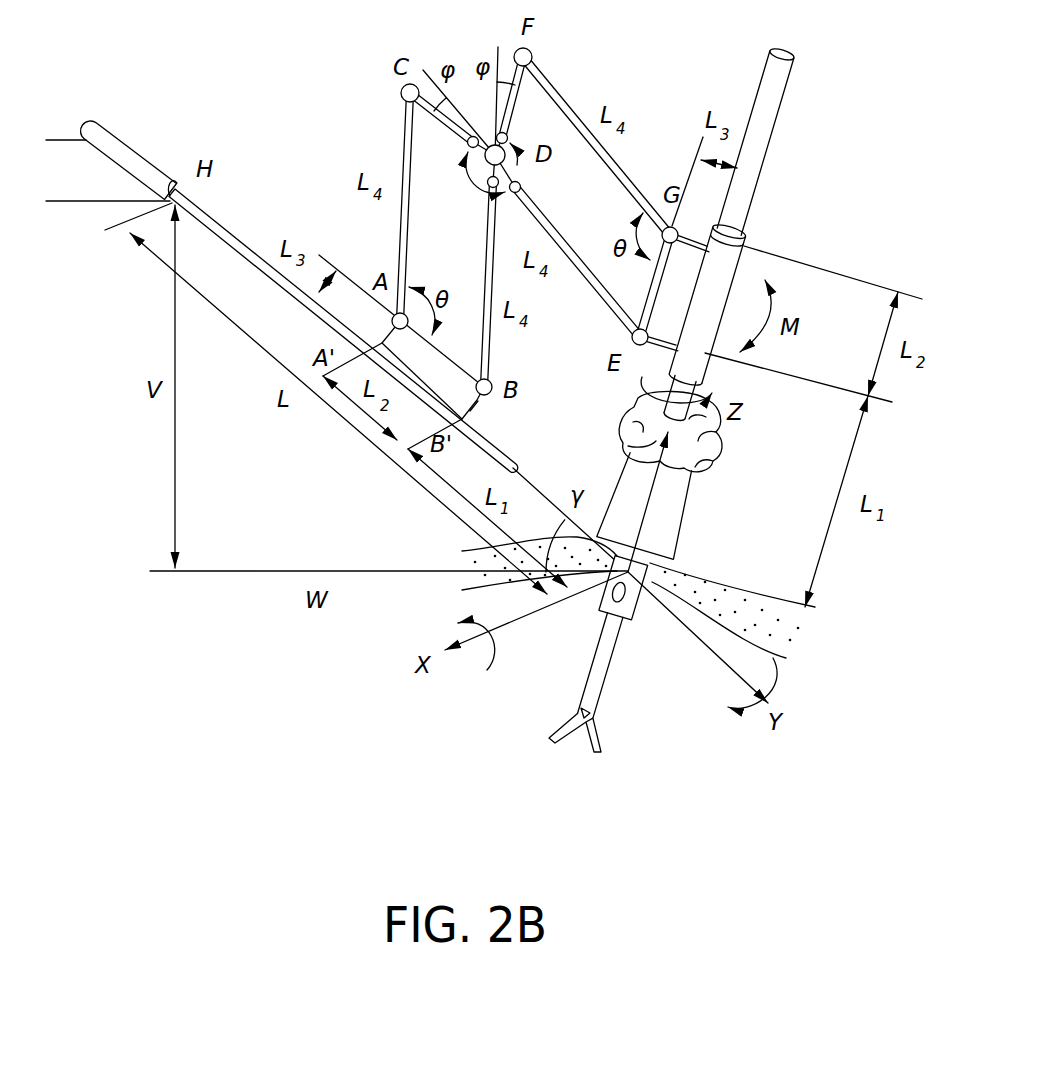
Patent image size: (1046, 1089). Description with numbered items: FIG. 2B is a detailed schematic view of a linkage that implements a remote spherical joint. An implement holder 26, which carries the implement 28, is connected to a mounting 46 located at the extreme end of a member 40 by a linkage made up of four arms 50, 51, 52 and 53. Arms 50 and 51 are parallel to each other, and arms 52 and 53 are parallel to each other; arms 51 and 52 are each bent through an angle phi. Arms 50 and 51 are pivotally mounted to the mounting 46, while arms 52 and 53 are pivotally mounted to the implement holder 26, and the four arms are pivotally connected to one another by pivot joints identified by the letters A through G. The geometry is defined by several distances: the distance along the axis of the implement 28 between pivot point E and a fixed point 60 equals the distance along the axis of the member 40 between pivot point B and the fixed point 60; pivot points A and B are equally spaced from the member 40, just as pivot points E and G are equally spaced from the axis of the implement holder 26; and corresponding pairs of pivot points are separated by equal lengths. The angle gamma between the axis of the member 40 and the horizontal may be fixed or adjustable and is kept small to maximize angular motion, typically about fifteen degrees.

The implement holder 26 is at (737, 245).
The implement 28 is at (763, 144).
The member 40 is at (241, 241).
The mounting 46 is at (477, 406).
The arm 50 is at (404, 133).
The arm 51 is at (486, 243).
The arm 52 is at (549, 218).
The arm 53 is at (565, 103).
The fixed point 60 is at (640, 590).